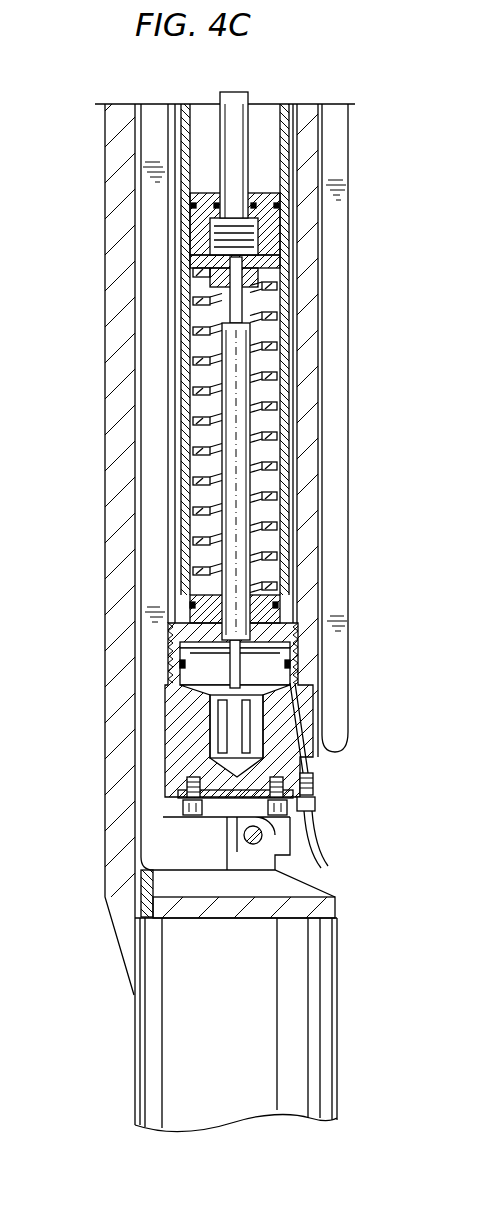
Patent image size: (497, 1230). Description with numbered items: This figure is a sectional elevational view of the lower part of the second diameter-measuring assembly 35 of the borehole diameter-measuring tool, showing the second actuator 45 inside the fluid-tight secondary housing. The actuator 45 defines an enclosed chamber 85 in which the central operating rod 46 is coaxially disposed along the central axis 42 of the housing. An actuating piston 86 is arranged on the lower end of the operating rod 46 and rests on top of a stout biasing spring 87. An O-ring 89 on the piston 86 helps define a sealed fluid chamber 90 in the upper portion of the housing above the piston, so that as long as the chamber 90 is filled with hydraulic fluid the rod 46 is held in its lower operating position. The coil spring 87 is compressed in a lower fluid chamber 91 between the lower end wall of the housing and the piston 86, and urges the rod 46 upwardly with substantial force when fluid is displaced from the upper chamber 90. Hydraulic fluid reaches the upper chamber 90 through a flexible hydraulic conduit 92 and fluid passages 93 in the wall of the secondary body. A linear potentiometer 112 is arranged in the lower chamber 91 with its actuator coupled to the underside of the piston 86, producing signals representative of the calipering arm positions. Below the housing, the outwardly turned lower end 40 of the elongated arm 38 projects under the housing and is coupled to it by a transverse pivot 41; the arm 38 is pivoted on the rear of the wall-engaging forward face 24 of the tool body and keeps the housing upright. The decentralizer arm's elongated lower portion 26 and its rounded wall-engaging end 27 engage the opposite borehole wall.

The wall-engaging forward face 24 is at (117, 800).
The elongated lower portion 26 is at (332, 463).
The rounded wall-engaging end 27 is at (321, 752).
The second diameter-measuring assembly 35 is at (363, 158).
The elongated arm 38 is at (153, 228).
The outwardly turned lower end 40 is at (167, 845).
The transverse pivot 41 is at (253, 845).
The central axis 42 is at (237, 550).
The second actuator 45 is at (305, 315).
The central operating rod 46 is at (233, 133).
The enclosed chamber 85 is at (232, 437).
The actuating piston 86 is at (268, 234).
The biasing spring 87 is at (275, 495).
The O-ring 89 is at (280, 207).
The sealed fluid chamber 90 is at (278, 133).
The lower fluid chamber 91 is at (197, 530).
The flexible hydraulic conduit 92 is at (323, 840).
The fluid passages 93 is at (293, 384).
The linear potentiometer 112 is at (245, 580).